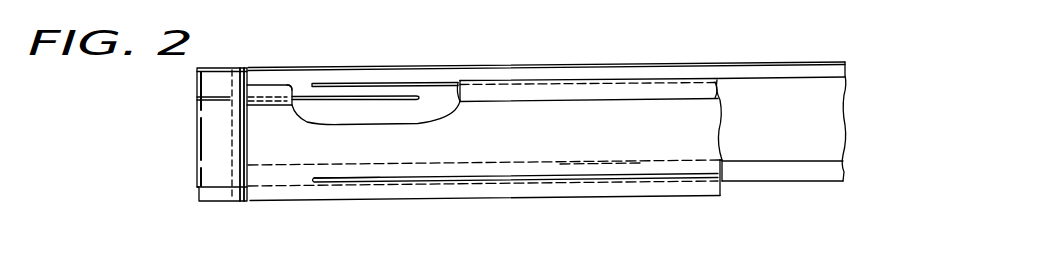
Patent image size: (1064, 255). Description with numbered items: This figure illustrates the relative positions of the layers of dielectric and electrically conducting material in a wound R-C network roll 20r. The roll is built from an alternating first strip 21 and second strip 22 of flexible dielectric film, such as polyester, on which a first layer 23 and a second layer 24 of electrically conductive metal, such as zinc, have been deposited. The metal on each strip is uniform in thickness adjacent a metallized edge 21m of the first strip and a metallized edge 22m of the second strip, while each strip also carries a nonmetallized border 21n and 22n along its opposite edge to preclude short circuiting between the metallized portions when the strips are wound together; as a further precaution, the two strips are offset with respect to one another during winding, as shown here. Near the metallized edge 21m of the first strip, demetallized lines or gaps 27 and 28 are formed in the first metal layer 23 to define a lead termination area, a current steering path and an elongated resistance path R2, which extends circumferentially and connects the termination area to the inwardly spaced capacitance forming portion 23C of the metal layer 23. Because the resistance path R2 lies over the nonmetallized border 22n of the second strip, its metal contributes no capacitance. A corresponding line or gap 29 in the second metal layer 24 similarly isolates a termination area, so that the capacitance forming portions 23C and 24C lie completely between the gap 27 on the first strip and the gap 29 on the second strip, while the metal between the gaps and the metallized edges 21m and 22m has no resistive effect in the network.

The network roll 20r is at (213, 153).
The first strip of dielectric material 21 is at (752, 185).
The metallized edge of first dielectric strip 21m is at (598, 66).
The nonmetallized border of first dielectric strip 21n is at (783, 177).
The second strip of dielectric material 22 is at (478, 200).
The metallized edge of second dielectric strip 22m is at (452, 193).
The nonmetallized border of second dielectric strip 22n is at (522, 90).
The first layer of electrically conductive metal 23 is at (828, 131).
The capacitance forming portion of first metal layer 23C is at (387, 107).
The second layer of electrically conductive metal 24 is at (592, 152).
The capacitance forming portion of second metal layer 24C is at (490, 112).
The demetallized line or gap 27 is at (303, 91).
The demetallized line or gap 28 is at (357, 81).
The line or gap in second metal layer 29 is at (380, 181).
The elongated resistance path R2 is at (335, 89).